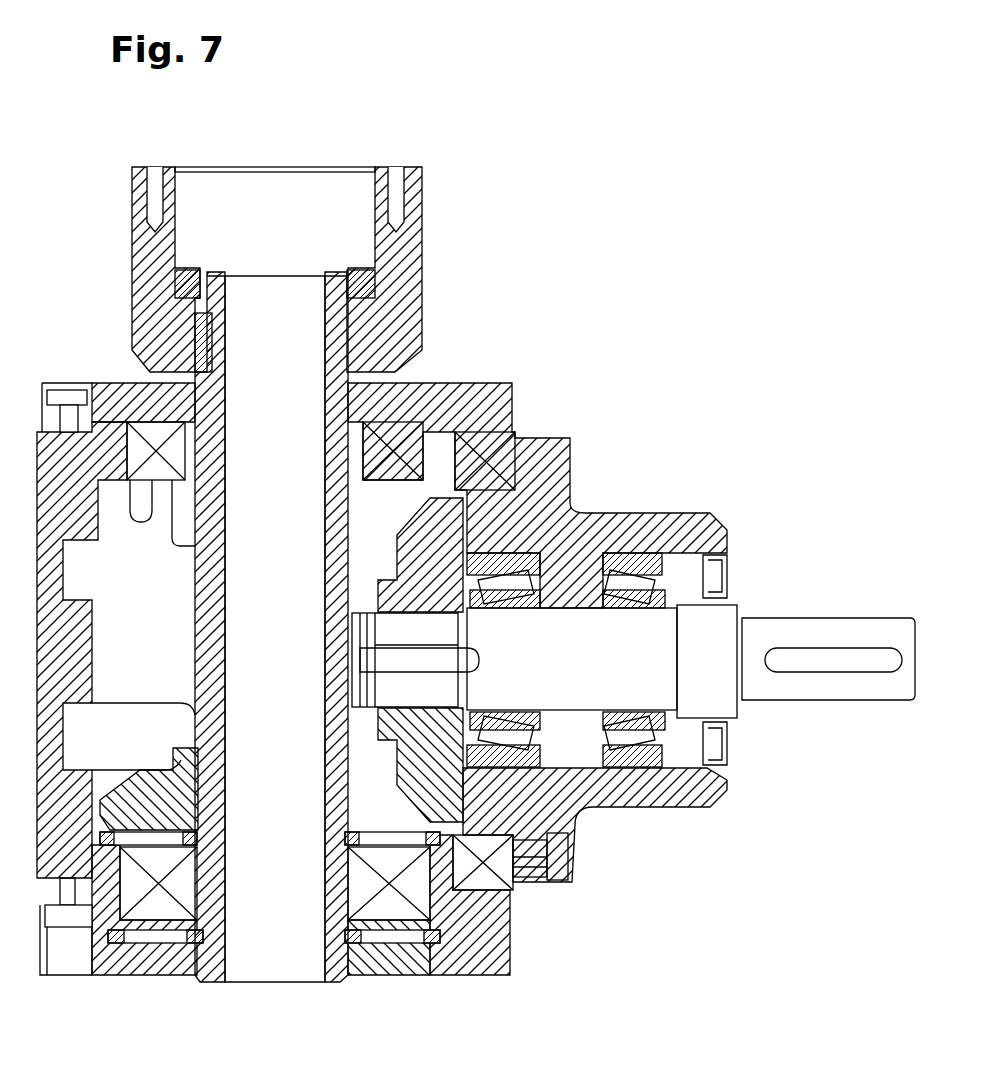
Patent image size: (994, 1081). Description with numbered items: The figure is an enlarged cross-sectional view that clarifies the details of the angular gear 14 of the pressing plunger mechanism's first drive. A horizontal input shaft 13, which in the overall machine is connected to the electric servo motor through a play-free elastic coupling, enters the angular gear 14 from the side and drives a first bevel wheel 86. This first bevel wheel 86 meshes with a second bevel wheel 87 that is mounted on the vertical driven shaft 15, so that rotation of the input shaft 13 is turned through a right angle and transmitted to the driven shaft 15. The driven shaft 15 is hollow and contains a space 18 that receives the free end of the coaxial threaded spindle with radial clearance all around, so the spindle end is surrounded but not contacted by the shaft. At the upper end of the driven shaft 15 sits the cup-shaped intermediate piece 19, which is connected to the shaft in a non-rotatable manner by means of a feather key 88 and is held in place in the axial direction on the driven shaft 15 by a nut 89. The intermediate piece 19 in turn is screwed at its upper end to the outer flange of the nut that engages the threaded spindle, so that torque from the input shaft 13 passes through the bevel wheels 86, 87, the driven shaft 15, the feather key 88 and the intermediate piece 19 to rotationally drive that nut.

The input shaft 13 is at (830, 685).
The angular gear 14 is at (515, 978).
The driven shaft 15 is at (340, 957).
The space 18 is at (275, 957).
The intermediate piece 19 is at (395, 290).
The first bevel wheel 86 is at (432, 577).
The second bevel wheel 87 is at (170, 806).
The feather key 88 is at (196, 331).
The nut 89 is at (196, 282).